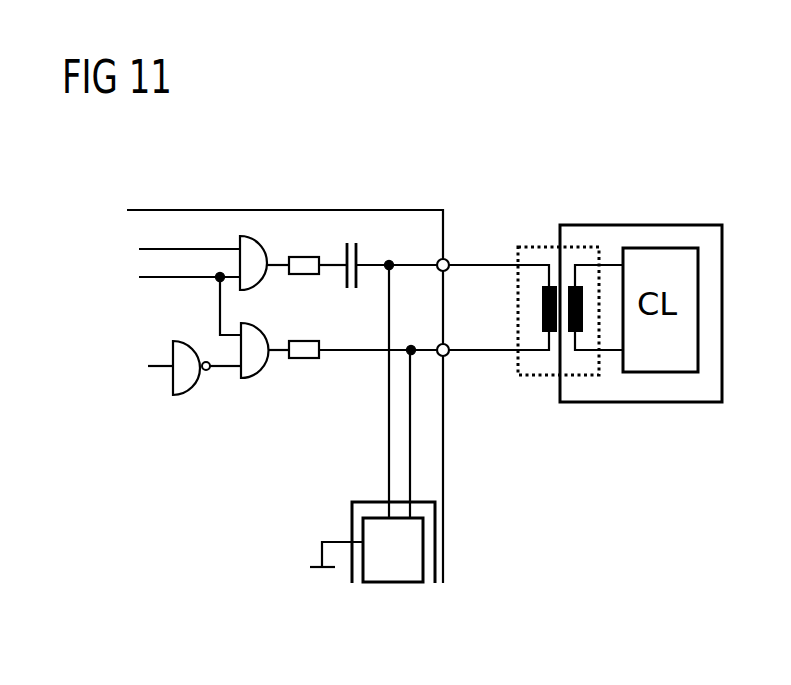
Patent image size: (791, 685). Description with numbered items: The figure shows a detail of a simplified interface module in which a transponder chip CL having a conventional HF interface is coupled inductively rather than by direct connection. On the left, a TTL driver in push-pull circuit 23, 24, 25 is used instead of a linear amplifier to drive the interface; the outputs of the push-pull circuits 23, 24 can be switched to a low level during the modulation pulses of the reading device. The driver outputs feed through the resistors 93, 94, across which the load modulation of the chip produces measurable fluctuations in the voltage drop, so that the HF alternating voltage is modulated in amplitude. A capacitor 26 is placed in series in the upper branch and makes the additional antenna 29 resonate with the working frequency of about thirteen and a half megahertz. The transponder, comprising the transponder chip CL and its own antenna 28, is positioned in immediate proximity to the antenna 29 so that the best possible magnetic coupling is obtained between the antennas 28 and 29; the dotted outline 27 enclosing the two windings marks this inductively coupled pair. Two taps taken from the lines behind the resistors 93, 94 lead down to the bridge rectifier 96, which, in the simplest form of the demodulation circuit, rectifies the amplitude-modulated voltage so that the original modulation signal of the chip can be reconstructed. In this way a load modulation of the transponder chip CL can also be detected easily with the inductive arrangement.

The push-pull circuit 23 is at (240, 234).
The push-pull circuit 24 is at (250, 379).
The push-pull circuit 25 is at (187, 396).
The capacitor 26 is at (357, 238).
The transformer 27 is at (537, 244).
The antenna 28 is at (578, 332).
The antenna 29 is at (545, 332).
The resistor 93 is at (298, 256).
The resistor 94 is at (307, 356).
The bridge rectifier 96 is at (408, 562).